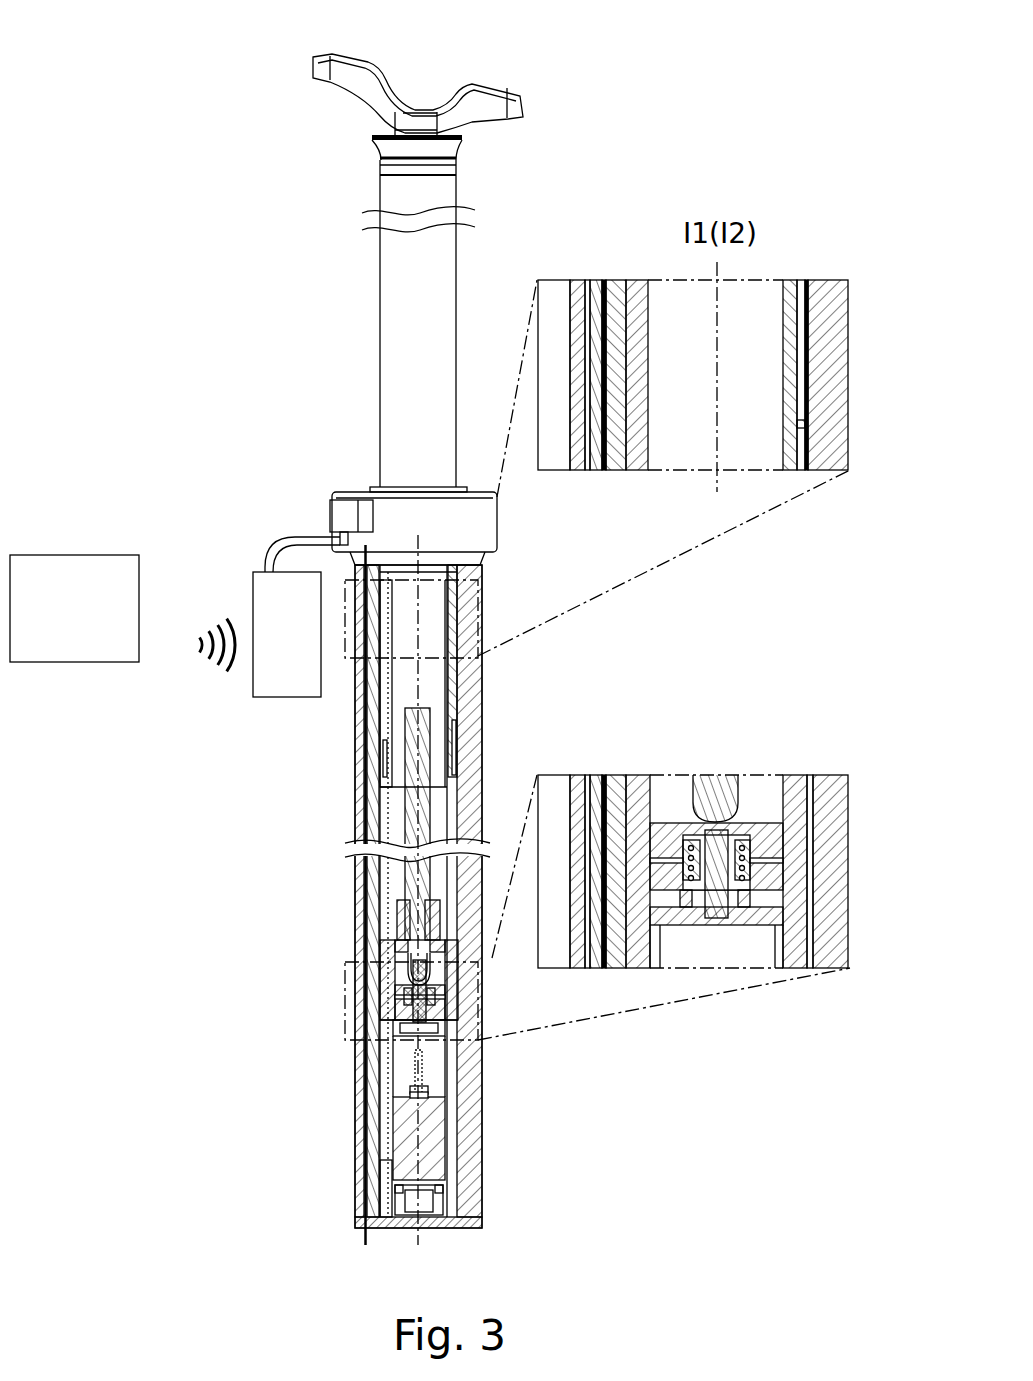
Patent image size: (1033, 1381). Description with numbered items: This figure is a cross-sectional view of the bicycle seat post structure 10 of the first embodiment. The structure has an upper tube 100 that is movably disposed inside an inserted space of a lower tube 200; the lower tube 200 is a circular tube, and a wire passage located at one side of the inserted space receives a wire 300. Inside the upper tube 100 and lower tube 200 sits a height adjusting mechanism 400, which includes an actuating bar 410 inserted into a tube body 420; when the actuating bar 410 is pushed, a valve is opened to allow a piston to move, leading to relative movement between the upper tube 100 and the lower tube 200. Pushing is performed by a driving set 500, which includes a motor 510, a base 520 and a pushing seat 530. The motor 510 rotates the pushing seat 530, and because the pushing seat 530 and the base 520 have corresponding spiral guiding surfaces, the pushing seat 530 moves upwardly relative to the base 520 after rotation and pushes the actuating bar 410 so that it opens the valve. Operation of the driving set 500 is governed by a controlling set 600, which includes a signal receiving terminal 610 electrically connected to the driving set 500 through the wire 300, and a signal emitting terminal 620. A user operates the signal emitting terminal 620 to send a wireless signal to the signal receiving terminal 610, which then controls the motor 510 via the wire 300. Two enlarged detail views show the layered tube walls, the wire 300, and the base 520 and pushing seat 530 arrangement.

The bicycle seat post structure 10 is at (50, 29).
The upper tube 100 is at (440, 196).
The lower tube 200 is at (832, 370).
The wire 300 is at (597, 280).
The height adjusting mechanism 400 is at (212, 762).
The actuating bar 410 is at (398, 893).
The tube body 420 is at (370, 770).
The driving set 500 is at (212, 997).
The motor 510 is at (400, 1118).
The base 520 is at (400, 1025).
The pushing seat 530 is at (380, 970).
The controlling set 600 is at (218, 410).
The signal receiving terminal 610 is at (268, 572).
The signal emitting terminal 620 is at (73, 555).